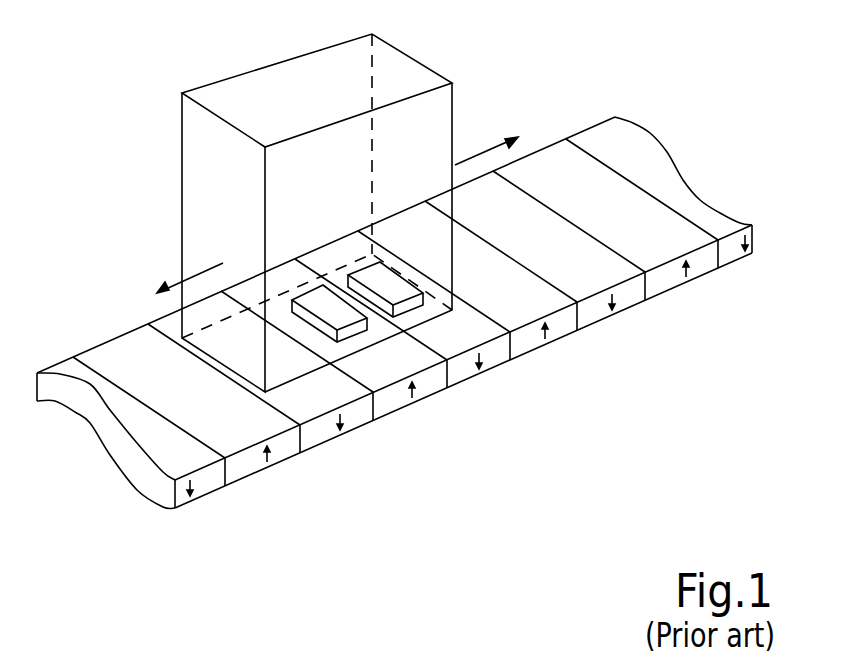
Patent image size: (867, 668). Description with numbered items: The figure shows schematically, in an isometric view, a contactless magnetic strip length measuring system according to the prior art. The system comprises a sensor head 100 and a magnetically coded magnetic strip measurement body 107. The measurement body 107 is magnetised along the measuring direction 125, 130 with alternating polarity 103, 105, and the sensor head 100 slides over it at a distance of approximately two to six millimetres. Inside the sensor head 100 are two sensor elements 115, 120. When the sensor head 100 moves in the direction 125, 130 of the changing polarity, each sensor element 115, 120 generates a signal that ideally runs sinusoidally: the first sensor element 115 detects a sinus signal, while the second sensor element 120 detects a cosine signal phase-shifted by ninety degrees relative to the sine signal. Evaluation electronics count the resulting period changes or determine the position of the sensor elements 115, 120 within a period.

The sensor head 100 is at (205, 190).
The polarity 103 is at (240, 472).
The polarity 105 is at (322, 433).
The magnetic strip measurement body 107 is at (623, 198).
The first sensor element 115 is at (367, 327).
The second sensor element 120 is at (422, 308).
The measuring direction 125 is at (487, 149).
The measuring direction 130 is at (177, 283).